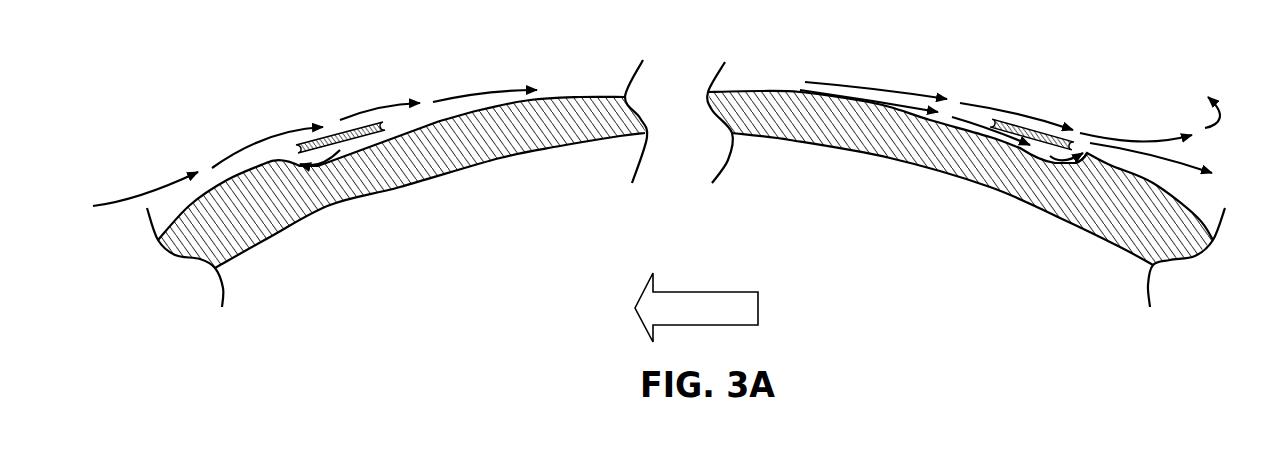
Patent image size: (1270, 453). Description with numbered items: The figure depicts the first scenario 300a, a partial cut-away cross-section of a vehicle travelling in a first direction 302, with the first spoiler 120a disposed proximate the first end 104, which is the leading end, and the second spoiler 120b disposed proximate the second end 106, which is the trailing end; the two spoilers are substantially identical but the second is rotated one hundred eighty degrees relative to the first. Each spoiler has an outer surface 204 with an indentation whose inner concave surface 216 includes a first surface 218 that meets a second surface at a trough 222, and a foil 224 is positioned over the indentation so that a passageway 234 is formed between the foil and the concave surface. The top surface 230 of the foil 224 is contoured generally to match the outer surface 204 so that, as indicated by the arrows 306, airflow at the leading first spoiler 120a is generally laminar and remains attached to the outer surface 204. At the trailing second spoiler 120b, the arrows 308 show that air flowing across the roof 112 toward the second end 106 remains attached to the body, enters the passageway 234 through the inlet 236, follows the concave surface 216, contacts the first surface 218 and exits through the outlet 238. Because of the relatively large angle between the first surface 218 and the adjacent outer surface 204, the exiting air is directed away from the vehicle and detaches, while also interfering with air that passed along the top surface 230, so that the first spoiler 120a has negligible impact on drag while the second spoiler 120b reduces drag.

The first scenario 300a is at (128, 112).
The first end 104 is at (190, 253).
The second end 106 is at (1150, 243).
The roof 112 is at (570, 127).
The first spoiler 120a is at (440, 233).
The second spoiler 120b is at (925, 253).
The outer surface 204 is at (560, 95).
The concave surface 216 is at (425, 162).
The first surface 218 is at (1102, 165).
The trough 222 is at (1077, 163).
The foil 224 is at (338, 105).
The top surface 230 is at (342, 133).
The passageway 234 is at (298, 167).
The inlet 236 is at (923, 122).
The outlet 238 is at (1090, 162).
The first direction 302 is at (696, 307).
The arrows 306 is at (240, 137).
The arrows 308 is at (1110, 120).